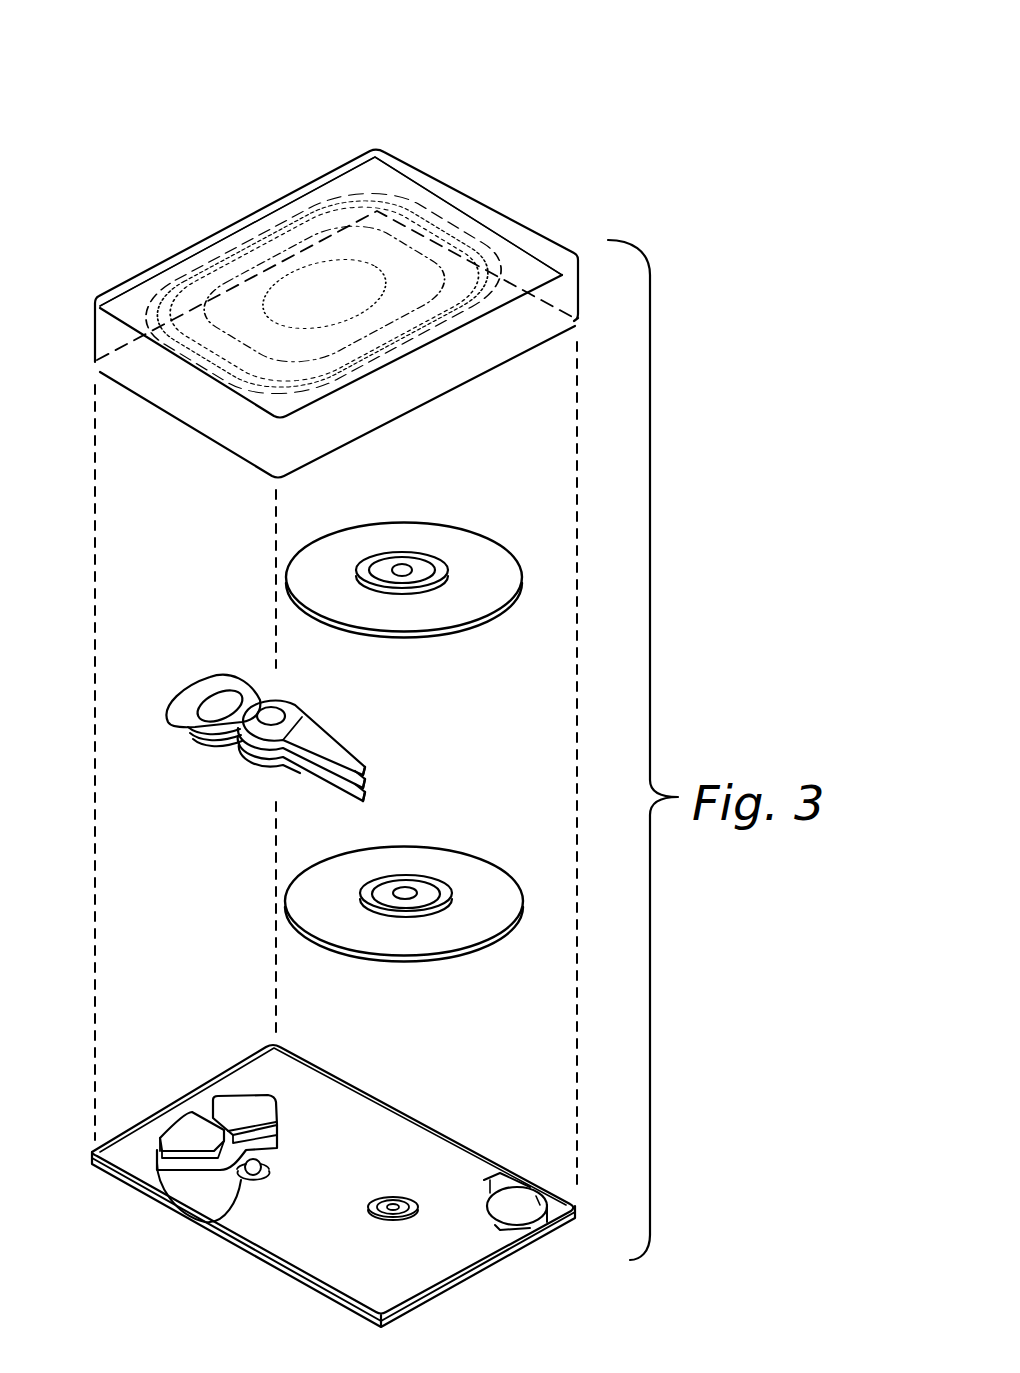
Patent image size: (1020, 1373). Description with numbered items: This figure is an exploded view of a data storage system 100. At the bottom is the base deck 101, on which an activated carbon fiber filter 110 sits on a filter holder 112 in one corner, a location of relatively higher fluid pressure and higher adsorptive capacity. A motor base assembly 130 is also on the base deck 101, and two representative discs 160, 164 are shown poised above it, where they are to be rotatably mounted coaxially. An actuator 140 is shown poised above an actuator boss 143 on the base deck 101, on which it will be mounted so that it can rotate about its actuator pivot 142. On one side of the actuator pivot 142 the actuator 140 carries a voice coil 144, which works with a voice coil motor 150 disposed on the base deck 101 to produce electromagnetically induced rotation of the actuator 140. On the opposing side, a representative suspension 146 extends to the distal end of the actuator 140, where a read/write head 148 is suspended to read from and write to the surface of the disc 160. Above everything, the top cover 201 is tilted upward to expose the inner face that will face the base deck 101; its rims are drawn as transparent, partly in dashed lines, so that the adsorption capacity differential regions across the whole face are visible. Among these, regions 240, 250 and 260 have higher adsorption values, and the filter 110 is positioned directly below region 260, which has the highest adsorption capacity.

The data storage system 100 is at (692, 102).
The base deck 101 is at (219, 1063).
The activated carbon fiber filter 110 is at (490, 1172).
The filter holder 112 is at (517, 1180).
The motor base assembly 130 is at (375, 1212).
The actuator 140 is at (200, 748).
The actuator pivot 142 is at (273, 706).
The actuator boss 143 is at (205, 1227).
The voice coil 144 is at (212, 674).
The suspension 146 is at (272, 778).
The read/write head 148 is at (344, 804).
The voice coil motor 150 is at (152, 1197).
The disc 160 is at (429, 969).
The disc 164 is at (406, 646).
The top cover 201 is at (262, 201).
The adsorption capacity region 240 is at (388, 176).
The adsorption capacity region 250 is at (493, 231).
The adsorption capacity region 260 is at (533, 260).